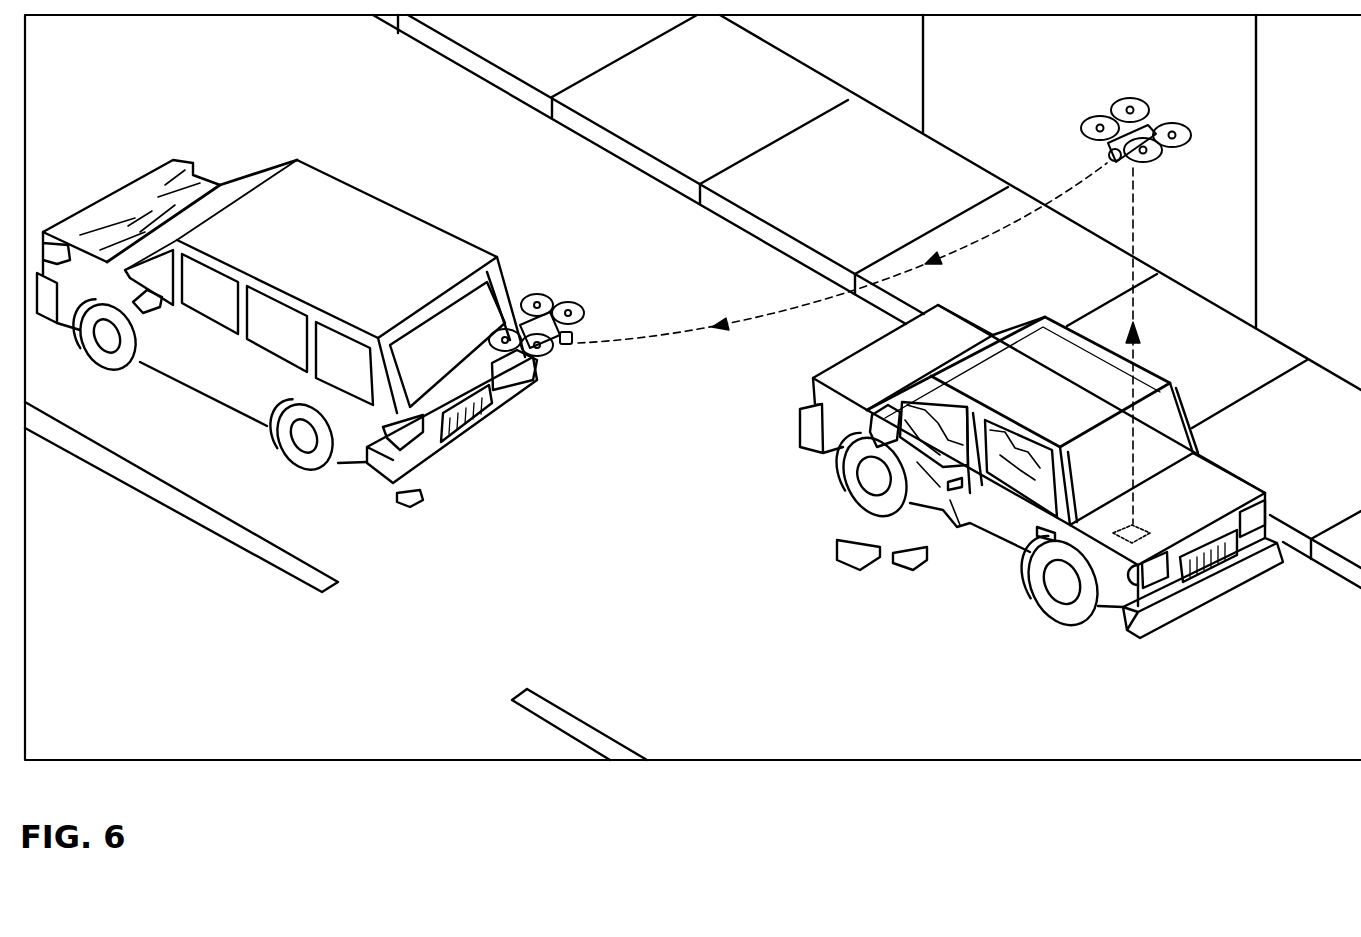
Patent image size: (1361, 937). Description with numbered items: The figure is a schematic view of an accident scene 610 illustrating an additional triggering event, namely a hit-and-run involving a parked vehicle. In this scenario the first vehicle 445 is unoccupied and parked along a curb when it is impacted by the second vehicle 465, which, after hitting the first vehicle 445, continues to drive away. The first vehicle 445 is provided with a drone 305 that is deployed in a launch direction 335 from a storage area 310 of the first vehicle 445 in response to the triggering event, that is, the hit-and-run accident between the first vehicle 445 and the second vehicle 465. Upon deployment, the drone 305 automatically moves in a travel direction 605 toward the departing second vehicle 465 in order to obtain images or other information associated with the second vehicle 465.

The drone 305 is at (578, 300).
The storage area 310 is at (1150, 523).
The launch direction 335 is at (1140, 228).
The first vehicle 445 is at (1223, 485).
The second vehicle 465 is at (405, 212).
The travel direction 605 is at (667, 337).
The accident scene 610 is at (430, 660).